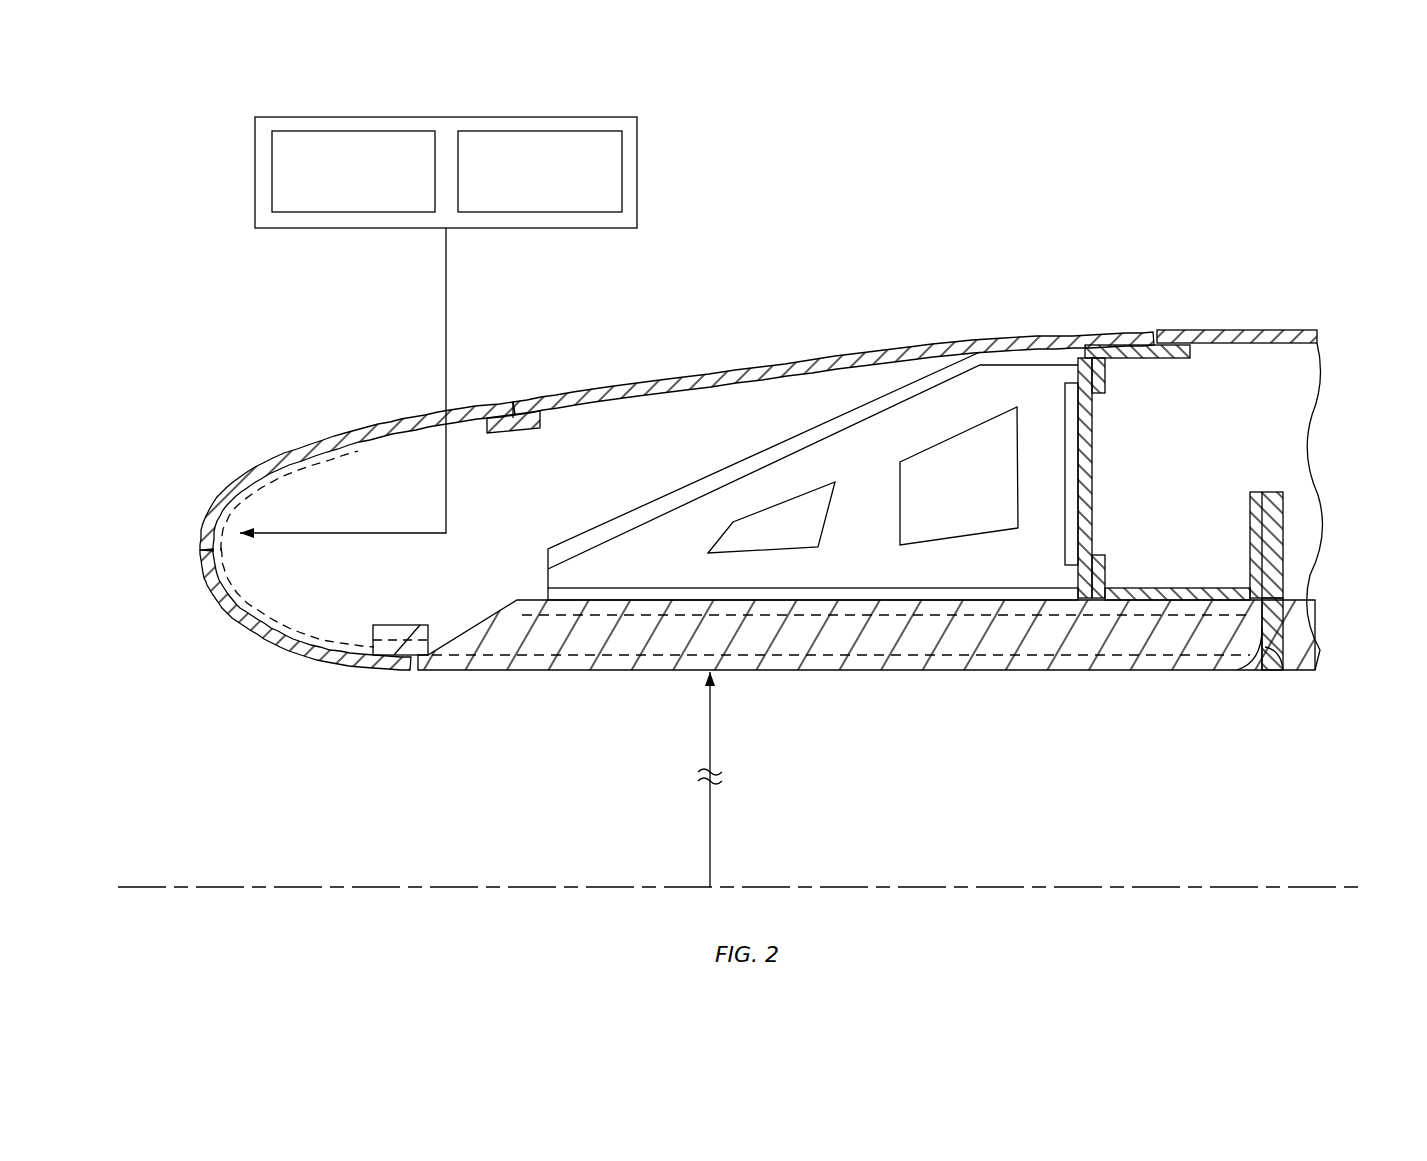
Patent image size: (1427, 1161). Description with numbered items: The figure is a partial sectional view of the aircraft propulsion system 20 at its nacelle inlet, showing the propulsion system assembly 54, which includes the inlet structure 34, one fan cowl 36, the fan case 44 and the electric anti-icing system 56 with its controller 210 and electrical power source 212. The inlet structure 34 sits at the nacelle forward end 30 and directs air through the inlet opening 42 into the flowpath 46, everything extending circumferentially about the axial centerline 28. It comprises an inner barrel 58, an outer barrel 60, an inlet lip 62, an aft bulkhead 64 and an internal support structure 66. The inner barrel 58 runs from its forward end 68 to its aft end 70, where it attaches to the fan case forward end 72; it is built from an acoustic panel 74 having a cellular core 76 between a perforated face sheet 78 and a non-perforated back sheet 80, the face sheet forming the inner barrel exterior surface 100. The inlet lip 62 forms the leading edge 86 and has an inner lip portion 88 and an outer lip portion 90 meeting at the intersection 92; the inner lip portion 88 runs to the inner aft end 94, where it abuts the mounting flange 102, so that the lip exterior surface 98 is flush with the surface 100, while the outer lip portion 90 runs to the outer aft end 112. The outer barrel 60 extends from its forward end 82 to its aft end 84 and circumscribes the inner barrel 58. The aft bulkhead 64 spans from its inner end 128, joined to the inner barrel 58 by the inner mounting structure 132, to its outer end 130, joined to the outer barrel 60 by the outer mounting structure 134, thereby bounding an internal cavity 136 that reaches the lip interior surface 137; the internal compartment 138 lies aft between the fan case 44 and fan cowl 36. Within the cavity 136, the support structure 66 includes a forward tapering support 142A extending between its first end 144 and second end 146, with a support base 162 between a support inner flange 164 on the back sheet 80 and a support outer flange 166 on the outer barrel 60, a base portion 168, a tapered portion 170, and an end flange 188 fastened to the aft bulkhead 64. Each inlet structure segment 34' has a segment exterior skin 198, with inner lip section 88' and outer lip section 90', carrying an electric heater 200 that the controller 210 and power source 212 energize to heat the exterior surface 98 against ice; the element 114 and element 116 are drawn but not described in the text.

The aircraft propulsion system 20 is at (142, 100).
The propulsion system assembly 54 is at (186, 137).
The electric anti-icing system 56 is at (483, 303).
The electrical power source 212 is at (353, 171).
The controller 210 is at (540, 171).
The inlet structure 34 is at (133, 313).
The inlet structure segment 34' is at (105, 511).
The inlet lip 62 is at (196, 481).
The nacelle forward end 30 is at (280, 475).
The leading edge 86 is at (280, 475).
The intersection 92 is at (276, 448).
The outer lip portion 90 is at (280, 475).
The outer lip section 90' is at (280, 475).
The inner lip portion 88 is at (305, 651).
The inner lip section 88' is at (305, 651).
The exterior surface 98 is at (283, 670).
The segment exterior skin 198 is at (266, 573).
The interior surface 137 is at (266, 573).
The electric heater 200 is at (224, 618).
The outer barrel 60 is at (833, 338).
The skin joint 114 is at (833, 338).
The tapered portion 170 is at (843, 341).
The outer aft end 112 is at (512, 416).
The splice plate 116 is at (512, 416).
The outer barrel forward end 82 is at (511, 404).
The support base 162 is at (762, 476).
The forward tapering support 142A is at (762, 476).
The internal support structure 66 is at (762, 476).
The support second end 146 is at (494, 583).
The support outer flange 166 is at (959, 480).
The support inner flange 164 is at (1010, 372).
The aft bulkhead outer end 130 is at (1109, 495).
The support first end 144 is at (1109, 495).
The aft bulkhead inner end 128 is at (1109, 495).
The aft bulkhead 64 is at (1109, 495).
The end flange 188 is at (1062, 440).
The outer mounting structure 134 is at (1169, 324).
The outer barrel aft end 84 is at (1165, 360).
The fan cowl 36 is at (1240, 449).
The internal compartment 138 is at (1268, 325).
The inner mounting structure 132 is at (1160, 590).
The fan case forward end 72 is at (1260, 608).
The inner barrel aft end 70 is at (1258, 636).
The inner barrel 58 is at (855, 690).
The acoustic panel 74 is at (855, 690).
The cellular core 76 is at (855, 690).
The perforated face sheet 78 is at (855, 690).
The non-perforated back sheet 80 is at (855, 690).
The inner barrel exterior surface 100 is at (855, 690).
The inner aft end 94 is at (858, 686).
The inner barrel forward end 68 is at (429, 590).
The mounting flange 102 is at (429, 590).
The internal cavity 136 is at (375, 628).
The base portion 168 is at (1020, 344).
The fan case 44 is at (1326, 634).
The inlet opening 42 is at (179, 796).
The axial centerline 28 is at (748, 779).
The flowpath 46 is at (1365, 826).